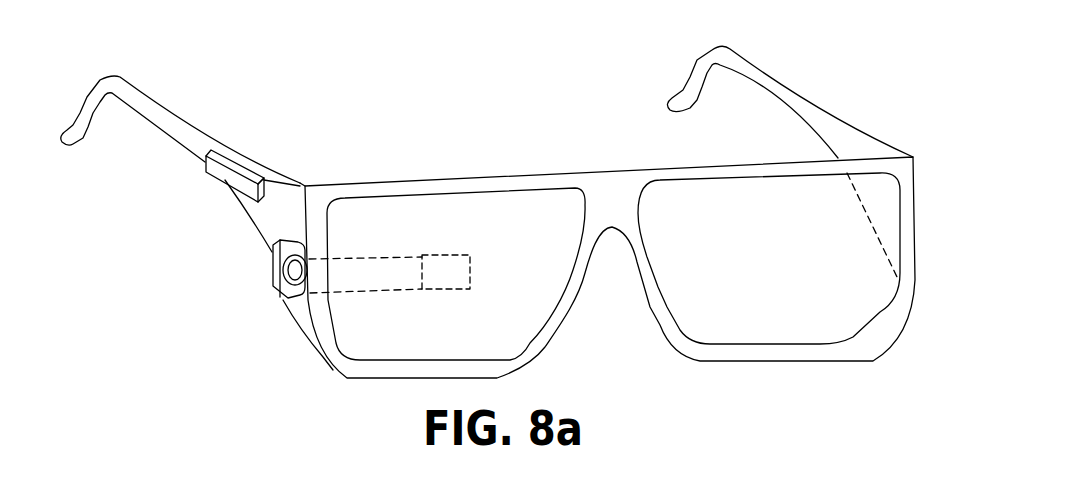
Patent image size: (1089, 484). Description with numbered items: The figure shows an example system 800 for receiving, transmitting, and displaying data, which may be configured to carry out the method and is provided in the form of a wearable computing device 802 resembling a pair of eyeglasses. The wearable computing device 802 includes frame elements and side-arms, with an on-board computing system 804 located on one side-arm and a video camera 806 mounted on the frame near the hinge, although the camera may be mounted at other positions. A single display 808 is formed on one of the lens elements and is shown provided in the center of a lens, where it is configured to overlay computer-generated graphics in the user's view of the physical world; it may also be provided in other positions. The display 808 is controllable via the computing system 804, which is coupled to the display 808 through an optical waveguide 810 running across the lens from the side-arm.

The system 800 is at (872, 84).
The wearable computing device 802 is at (968, 223).
The on-board computing system 804 is at (223, 174).
The video camera 806 is at (275, 275).
The display 808 is at (440, 290).
The optical waveguide 810 is at (353, 293).